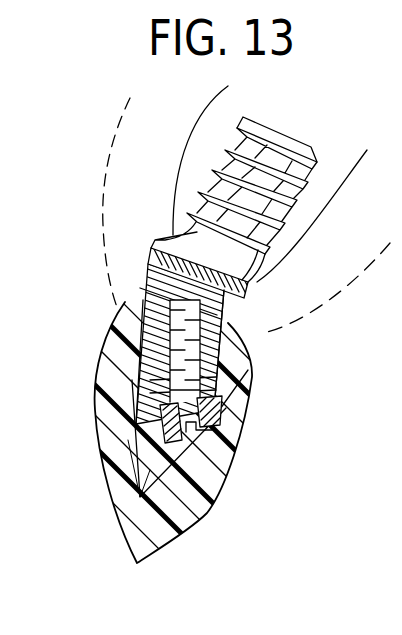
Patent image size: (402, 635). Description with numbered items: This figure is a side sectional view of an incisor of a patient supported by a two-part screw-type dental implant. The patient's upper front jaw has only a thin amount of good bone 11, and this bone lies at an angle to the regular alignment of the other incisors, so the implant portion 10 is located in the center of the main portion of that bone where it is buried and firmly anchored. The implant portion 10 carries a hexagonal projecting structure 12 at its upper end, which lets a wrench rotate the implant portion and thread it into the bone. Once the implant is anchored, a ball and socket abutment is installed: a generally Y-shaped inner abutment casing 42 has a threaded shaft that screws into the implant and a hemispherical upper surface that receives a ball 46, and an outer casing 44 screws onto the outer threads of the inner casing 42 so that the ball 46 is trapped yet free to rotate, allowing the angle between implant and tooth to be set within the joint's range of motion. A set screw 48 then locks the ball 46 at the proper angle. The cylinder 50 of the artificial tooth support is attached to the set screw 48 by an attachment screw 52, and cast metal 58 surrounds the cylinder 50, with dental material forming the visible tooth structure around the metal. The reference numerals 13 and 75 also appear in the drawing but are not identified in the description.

The implant portion 10 is at (217, 288).
The good bone 11 is at (313, 236).
The projecting structure 12 is at (210, 395).
The threaded post screw 13 is at (257, 208).
The inner abutment casing 42 is at (228, 303).
The outer casing 44 is at (142, 264).
The ball 46 is at (135, 331).
The set screw 48 is at (168, 366).
The cylinder 50 is at (163, 430).
The attachment screw 52 is at (214, 428).
The cast metal 58 is at (142, 465).
The jaw bone 75 is at (185, 526).